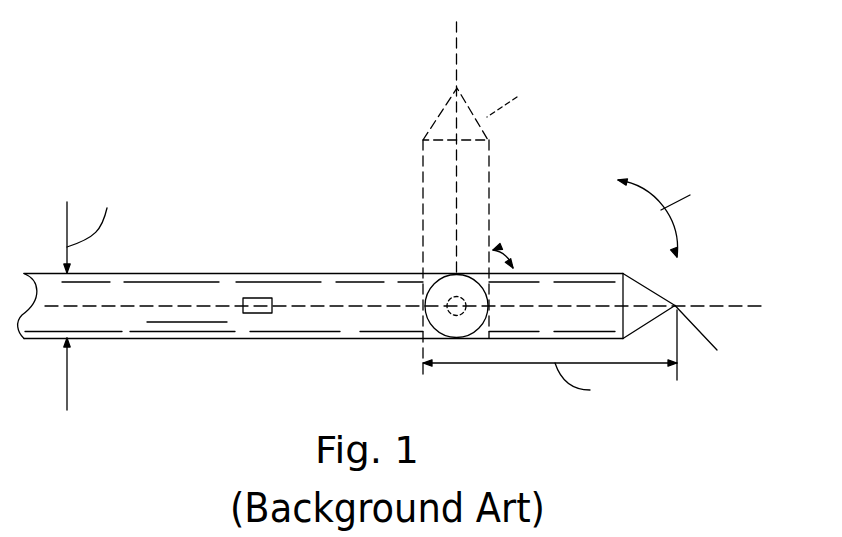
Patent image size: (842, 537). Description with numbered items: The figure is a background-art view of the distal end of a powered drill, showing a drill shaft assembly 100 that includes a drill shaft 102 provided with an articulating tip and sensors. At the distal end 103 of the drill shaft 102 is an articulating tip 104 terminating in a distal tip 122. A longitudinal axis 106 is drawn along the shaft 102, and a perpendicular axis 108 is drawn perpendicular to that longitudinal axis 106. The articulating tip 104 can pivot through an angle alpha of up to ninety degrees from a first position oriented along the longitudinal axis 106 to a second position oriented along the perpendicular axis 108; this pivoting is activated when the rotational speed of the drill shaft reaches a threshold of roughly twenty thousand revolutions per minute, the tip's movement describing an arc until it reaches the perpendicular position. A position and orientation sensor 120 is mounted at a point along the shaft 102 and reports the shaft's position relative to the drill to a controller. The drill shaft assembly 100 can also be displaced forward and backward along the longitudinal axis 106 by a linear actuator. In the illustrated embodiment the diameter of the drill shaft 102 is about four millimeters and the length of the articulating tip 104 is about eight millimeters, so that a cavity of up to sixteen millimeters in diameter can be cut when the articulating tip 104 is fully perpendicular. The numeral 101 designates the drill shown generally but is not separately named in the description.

The drill shaft assembly 100 is at (428, 138).
The medical instrument 101 is at (228, 192).
The drill shaft 102 is at (127, 275).
The distal end 103 is at (585, 268).
The articulating tip 104 is at (558, 258).
The longitudinal axis 106 is at (298, 305).
The perpendicular axis 108 is at (458, 78).
The position and orientation sensor 120 is at (253, 313).
The distal tip 122 is at (713, 341).